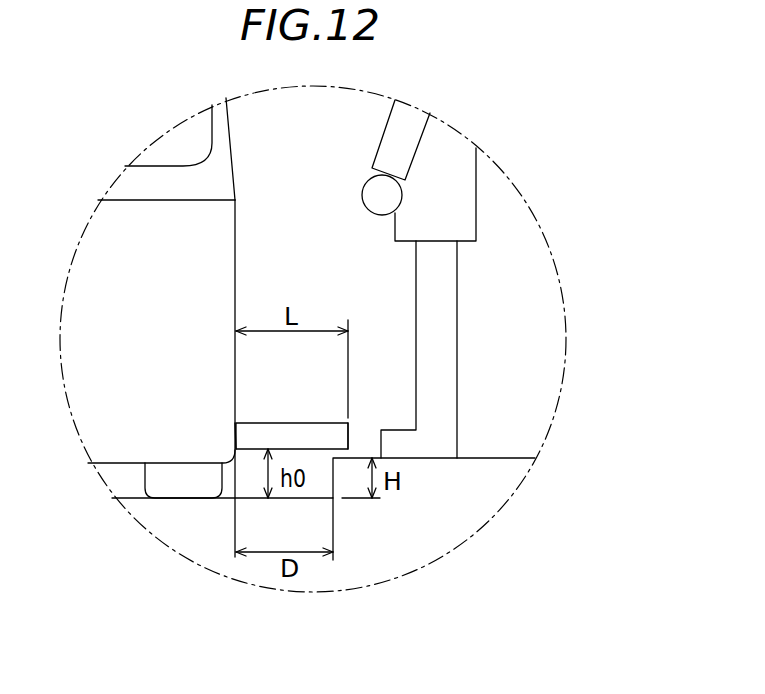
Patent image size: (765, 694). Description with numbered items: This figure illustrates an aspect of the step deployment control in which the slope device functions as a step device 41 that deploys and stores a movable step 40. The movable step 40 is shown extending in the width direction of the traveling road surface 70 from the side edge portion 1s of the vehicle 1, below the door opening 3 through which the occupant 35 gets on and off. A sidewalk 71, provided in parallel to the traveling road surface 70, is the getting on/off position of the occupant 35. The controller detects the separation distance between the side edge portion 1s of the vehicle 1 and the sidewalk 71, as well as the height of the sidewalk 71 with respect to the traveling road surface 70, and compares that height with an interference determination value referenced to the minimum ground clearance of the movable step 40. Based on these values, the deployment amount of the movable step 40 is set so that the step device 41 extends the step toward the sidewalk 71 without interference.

The vehicle 1 is at (235, 170).
The door opening 3 is at (236, 253).
The occupant 35 is at (458, 265).
The movable step 40 is at (277, 423).
The step device 41 is at (354, 403).
The side edge portion 1s is at (245, 427).
The traveling road surface 70 is at (112, 497).
The sidewalk 71 is at (492, 458).